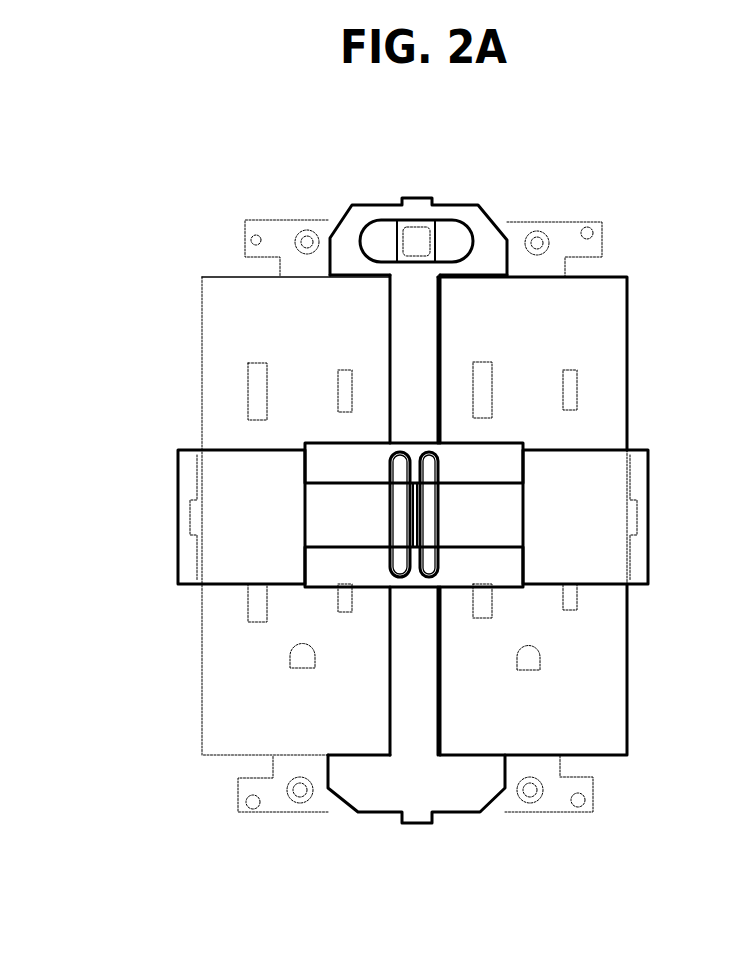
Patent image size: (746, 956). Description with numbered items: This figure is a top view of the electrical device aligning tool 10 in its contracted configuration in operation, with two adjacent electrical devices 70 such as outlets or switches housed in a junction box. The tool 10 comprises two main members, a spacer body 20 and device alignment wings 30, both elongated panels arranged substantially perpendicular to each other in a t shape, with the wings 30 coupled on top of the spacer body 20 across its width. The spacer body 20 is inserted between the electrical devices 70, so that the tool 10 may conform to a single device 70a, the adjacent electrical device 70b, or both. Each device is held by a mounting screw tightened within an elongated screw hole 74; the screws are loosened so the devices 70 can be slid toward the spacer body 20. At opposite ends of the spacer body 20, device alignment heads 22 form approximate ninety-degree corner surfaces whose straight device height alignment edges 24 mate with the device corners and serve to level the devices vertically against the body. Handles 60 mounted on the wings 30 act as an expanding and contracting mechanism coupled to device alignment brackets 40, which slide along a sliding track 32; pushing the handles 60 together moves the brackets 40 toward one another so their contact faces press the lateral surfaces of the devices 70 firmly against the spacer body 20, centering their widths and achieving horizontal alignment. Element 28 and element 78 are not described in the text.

The electrical device aligning tool 10 is at (405, 136).
The spacer body 20 is at (386, 352).
The device alignment heads 22 is at (300, 241).
The device height alignment edges 24 is at (477, 279).
The top cap with slot 28 is at (442, 226).
The device alignment wings 30 is at (246, 438).
The sliding track 32 is at (376, 596).
The device alignment brackets 40 is at (172, 506).
The handles 60 is at (440, 576).
The electrical devices 70 is at (196, 722).
The single device 70a is at (178, 746).
The adjacent electrical device 70b is at (660, 748).
The elongated screw hole 74 is at (288, 800).
The bottom mounting boss 78 is at (306, 802).